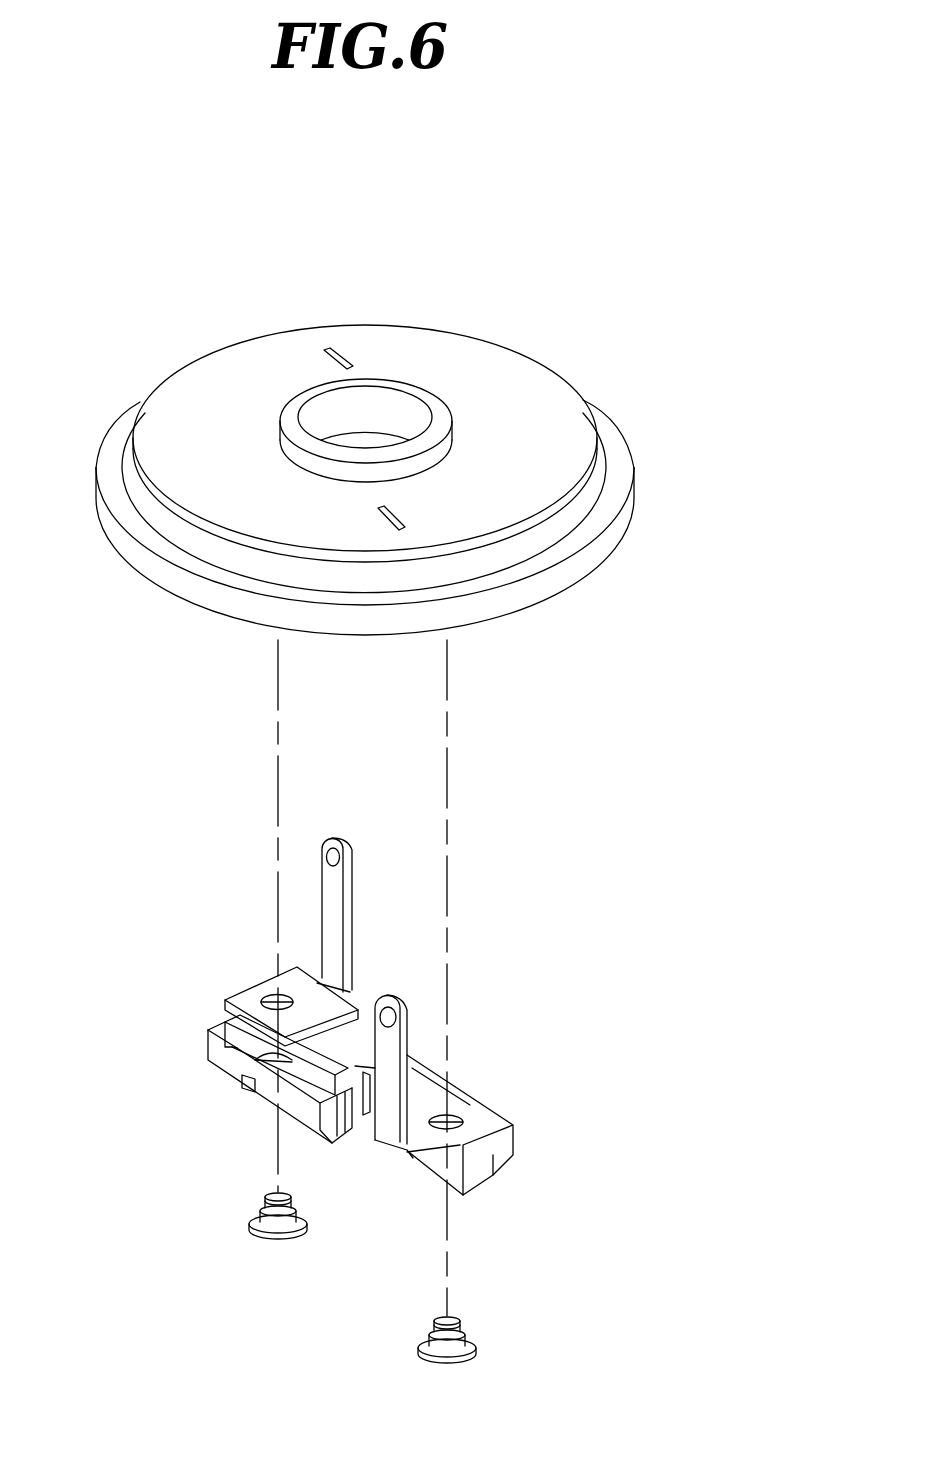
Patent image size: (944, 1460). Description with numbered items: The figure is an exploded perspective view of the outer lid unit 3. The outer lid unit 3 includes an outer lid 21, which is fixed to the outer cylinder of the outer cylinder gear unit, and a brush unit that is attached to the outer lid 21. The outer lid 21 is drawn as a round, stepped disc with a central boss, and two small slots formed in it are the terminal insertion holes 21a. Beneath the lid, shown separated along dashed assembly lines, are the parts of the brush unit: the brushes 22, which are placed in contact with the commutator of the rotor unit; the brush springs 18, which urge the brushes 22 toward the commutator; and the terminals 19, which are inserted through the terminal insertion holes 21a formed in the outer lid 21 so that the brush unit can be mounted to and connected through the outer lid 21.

The outer lid unit 3 is at (426, 396).
The outer lid 21 is at (633, 500).
The terminal insertion holes 21a is at (335, 358).
The brush springs 18 is at (232, 1066).
The terminals 19 is at (407, 1040).
The brushes 22 is at (365, 1066).